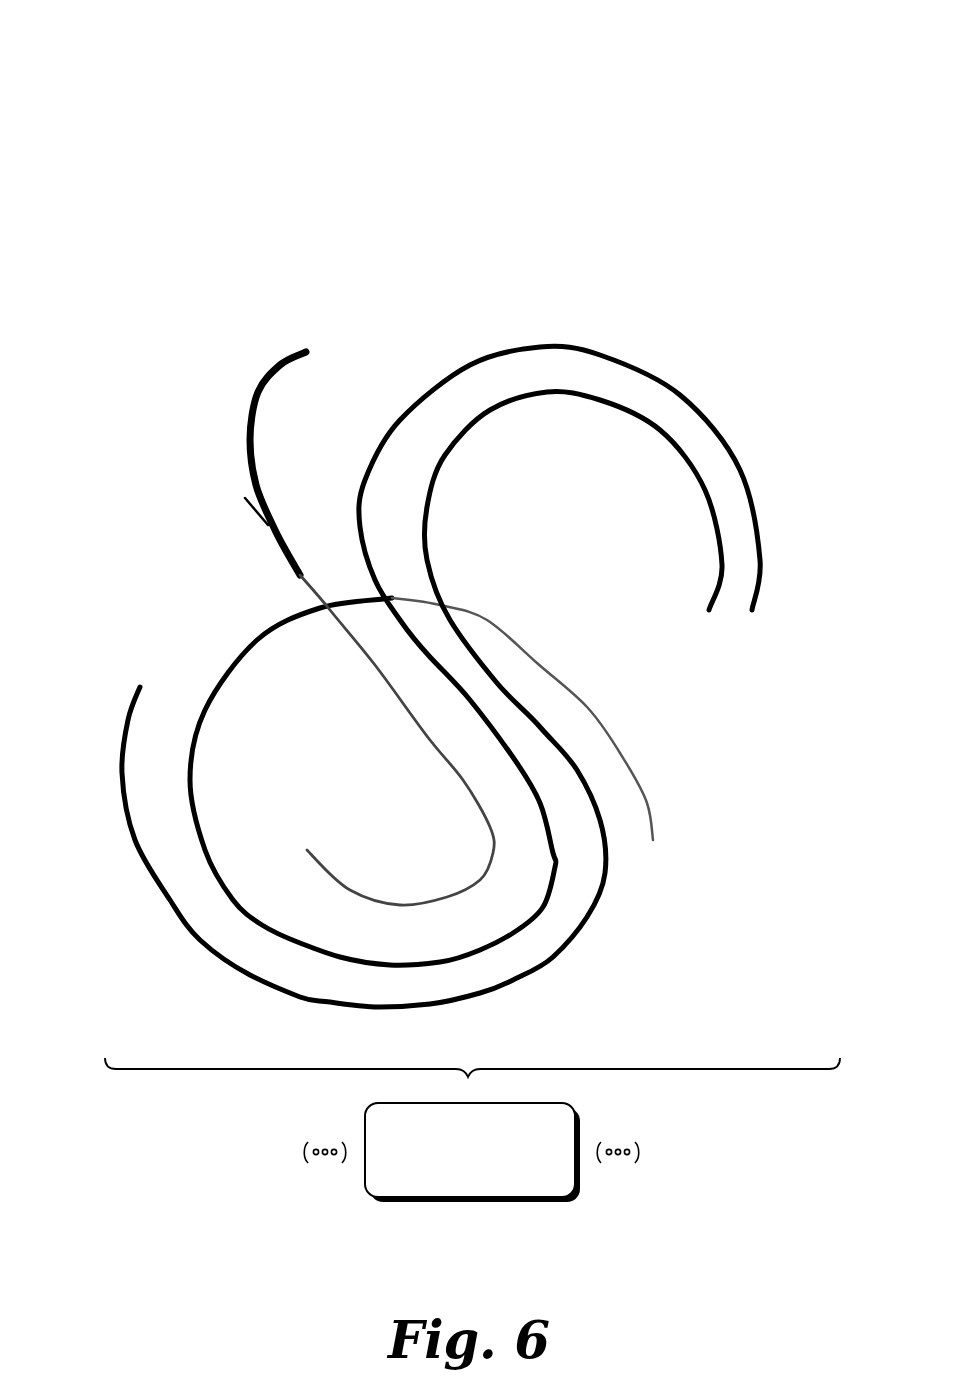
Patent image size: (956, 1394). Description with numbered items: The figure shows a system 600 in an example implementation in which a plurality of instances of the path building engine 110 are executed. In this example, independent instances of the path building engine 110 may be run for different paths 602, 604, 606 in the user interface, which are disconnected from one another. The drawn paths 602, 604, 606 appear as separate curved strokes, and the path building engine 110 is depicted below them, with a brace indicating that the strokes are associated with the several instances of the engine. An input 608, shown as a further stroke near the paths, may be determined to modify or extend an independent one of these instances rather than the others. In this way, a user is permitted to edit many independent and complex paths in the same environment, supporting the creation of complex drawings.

The system 600 is at (186, 65).
The path 602 is at (553, 345).
The path 604 is at (450, 452).
The path 606 is at (420, 740).
The input 608 is at (250, 395).
The path building engine 110 is at (492, 1180).